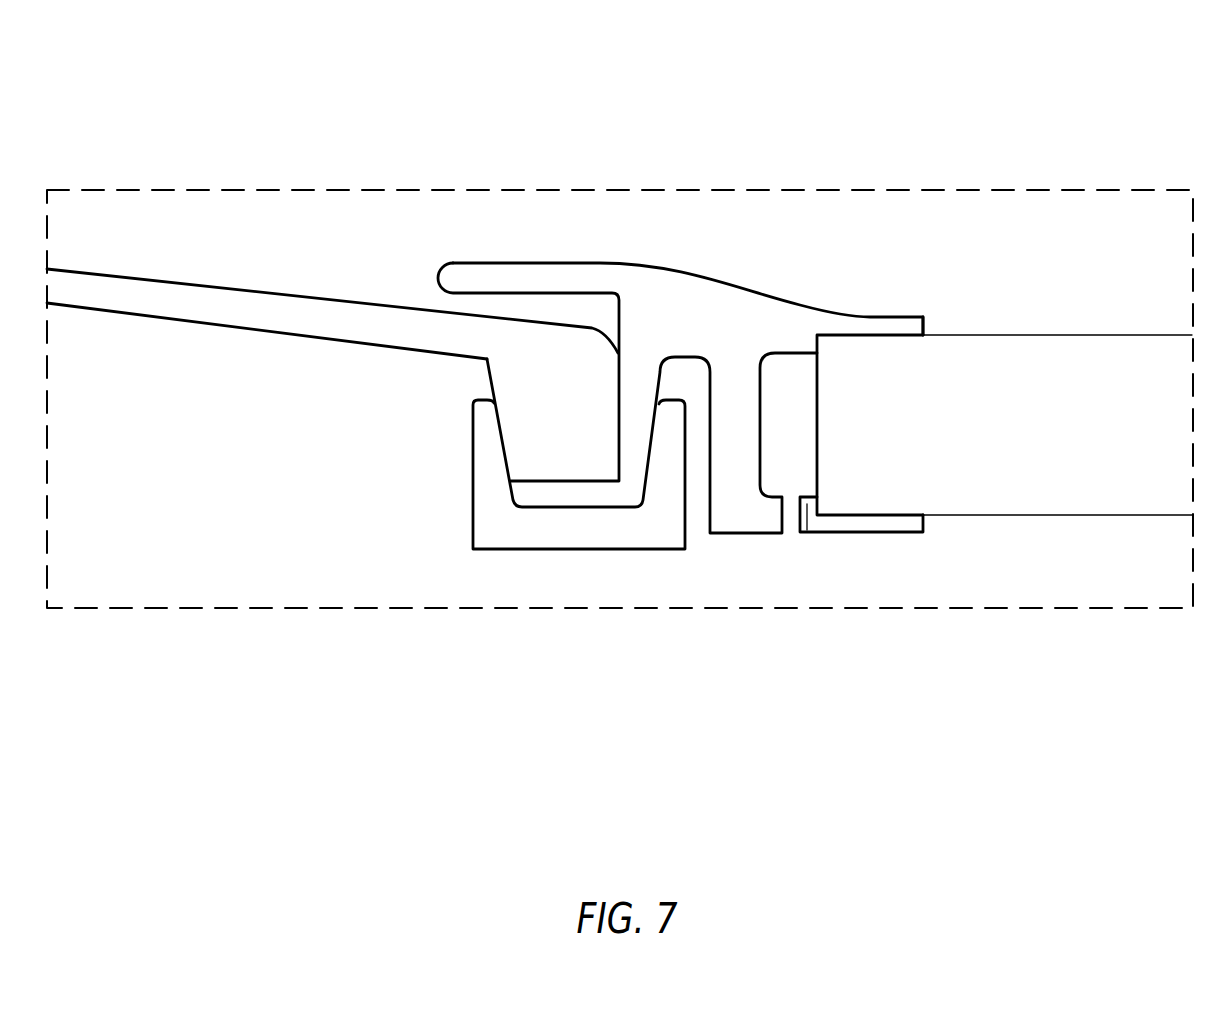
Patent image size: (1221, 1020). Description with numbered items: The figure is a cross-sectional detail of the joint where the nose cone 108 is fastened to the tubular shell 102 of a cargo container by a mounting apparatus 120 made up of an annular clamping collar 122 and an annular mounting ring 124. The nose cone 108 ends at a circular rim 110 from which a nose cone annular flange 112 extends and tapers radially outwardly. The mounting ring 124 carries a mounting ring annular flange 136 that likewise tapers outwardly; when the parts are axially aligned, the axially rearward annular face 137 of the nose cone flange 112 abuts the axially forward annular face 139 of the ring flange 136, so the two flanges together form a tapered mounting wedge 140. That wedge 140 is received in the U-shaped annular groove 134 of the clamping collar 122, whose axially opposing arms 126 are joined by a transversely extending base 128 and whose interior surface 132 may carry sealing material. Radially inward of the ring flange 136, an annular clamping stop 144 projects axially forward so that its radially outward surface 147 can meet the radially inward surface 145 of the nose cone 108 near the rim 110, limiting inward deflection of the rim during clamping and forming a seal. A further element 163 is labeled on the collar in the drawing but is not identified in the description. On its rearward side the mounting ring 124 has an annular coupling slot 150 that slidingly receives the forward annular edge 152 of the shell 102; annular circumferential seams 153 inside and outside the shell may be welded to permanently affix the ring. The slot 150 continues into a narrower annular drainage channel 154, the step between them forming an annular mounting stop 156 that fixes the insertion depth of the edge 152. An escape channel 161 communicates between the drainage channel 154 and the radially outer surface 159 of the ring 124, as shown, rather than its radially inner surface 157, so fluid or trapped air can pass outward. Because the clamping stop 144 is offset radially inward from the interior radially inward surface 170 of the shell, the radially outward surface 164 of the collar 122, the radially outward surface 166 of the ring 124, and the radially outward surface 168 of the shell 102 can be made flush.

The tubular shell 102 is at (1135, 360).
The nose cone 108 is at (143, 293).
The circular rim 110 is at (570, 397).
The nose cone annular flange 112 is at (543, 372).
The mounting apparatus 120 is at (792, 665).
The annular clamping collar 122 is at (652, 537).
The annular mounting ring 124 is at (723, 523).
The axially opposing arms 126 is at (673, 417).
The transversely extending base 128 is at (577, 532).
The interior surface 132 is at (535, 511).
The annular groove 134 is at (604, 502).
The mounting ring annular flange 136 is at (642, 363).
The axially rearward annular face 137 is at (614, 458).
The axially forward annular face 139 is at (629, 440).
The mounting wedge 140 is at (622, 87).
The annular clamping stop 144 is at (528, 278).
The radially inward surface 145 is at (517, 324).
The radially outward surface 147 is at (490, 286).
The annular coupling slot 150 is at (852, 332).
The forward annular edge 152 is at (845, 458).
The annular circumferential seams 153 is at (929, 333).
The annular drainage channel 154 is at (805, 412).
The annular mounting stop 156 is at (803, 345).
The radially inner surface 157 is at (889, 314).
The radially outer surface 159 is at (904, 533).
The escape channel 161 is at (792, 527).
The outer wall 163 is at (503, 458).
The radially outward surface 164 is at (492, 554).
The radially outward surface 166 is at (732, 537).
The radially outward surface 168 is at (1047, 517).
The radially inward surface 170 is at (1010, 333).